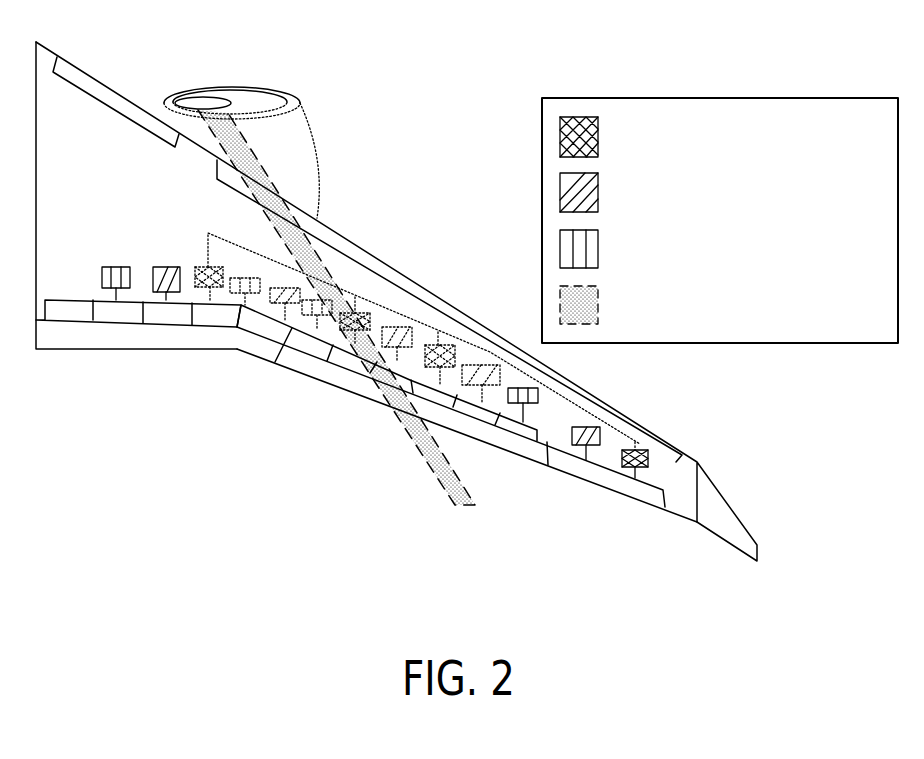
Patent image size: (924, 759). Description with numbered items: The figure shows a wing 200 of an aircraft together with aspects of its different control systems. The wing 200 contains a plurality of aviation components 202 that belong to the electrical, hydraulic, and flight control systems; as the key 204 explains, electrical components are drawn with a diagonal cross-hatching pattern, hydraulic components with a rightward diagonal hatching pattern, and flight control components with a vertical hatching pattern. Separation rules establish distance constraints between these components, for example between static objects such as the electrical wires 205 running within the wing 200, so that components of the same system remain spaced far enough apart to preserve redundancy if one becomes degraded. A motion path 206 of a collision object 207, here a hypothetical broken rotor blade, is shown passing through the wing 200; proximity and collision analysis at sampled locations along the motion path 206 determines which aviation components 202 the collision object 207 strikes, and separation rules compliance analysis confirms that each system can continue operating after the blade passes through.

The wing 200 is at (358, 106).
The aviation components 202 is at (125, 252).
The key 204 is at (650, 88).
The electrical wires 205 is at (202, 244).
The motion path 206 is at (417, 450).
The collision object 207 is at (201, 100).